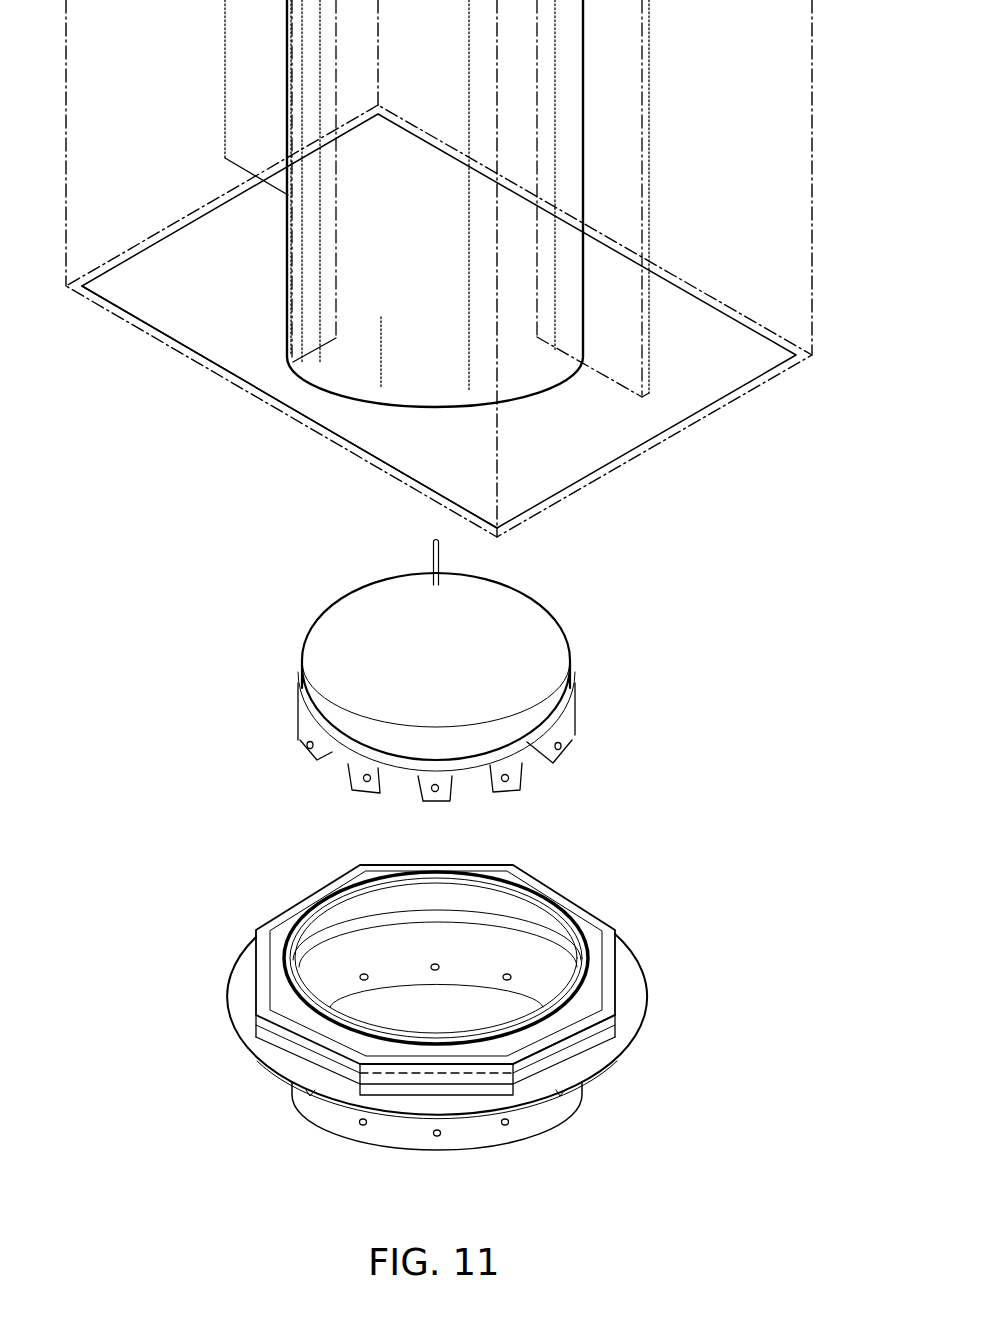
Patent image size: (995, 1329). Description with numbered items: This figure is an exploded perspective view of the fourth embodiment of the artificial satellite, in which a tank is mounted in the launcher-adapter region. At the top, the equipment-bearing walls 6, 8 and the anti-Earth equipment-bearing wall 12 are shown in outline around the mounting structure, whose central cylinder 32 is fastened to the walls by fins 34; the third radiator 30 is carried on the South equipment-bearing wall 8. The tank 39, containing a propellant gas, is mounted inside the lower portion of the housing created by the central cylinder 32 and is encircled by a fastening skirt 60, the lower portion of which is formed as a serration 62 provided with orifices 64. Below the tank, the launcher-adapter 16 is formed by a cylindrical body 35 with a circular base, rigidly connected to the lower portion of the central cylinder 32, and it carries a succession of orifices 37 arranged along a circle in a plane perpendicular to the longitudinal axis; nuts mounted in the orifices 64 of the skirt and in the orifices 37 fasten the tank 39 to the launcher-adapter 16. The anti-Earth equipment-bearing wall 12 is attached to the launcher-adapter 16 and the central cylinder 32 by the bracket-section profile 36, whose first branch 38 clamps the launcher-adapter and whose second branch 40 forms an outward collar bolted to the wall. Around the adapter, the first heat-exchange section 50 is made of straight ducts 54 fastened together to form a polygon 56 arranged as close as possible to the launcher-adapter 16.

The equipment-bearing wall 6 is at (783, 220).
The equipment-bearing wall 8 is at (439, 321).
The third radiator 30 is at (170, 322).
The anti-Earth equipment-bearing wall 12 is at (250, 398).
The fins 34 is at (630, 143).
The central cylinder 32 is at (522, 365).
The tank 39 is at (573, 628).
The fastening skirt 60 is at (437, 740).
The serration 62 is at (565, 748).
The orifices 64 is at (515, 785).
The second branch 40 is at (240, 995).
The first heat-exchange section 50 is at (508, 980).
The polygon 56 is at (620, 988).
The profile 36 is at (622, 1055).
The straight ducts 54 is at (285, 1023).
The first branch 38 is at (431, 1010).
The cylindrical body 35 is at (553, 1107).
The launcher-adapter 16 is at (448, 1145).
The orifices 37 is at (437, 1137).